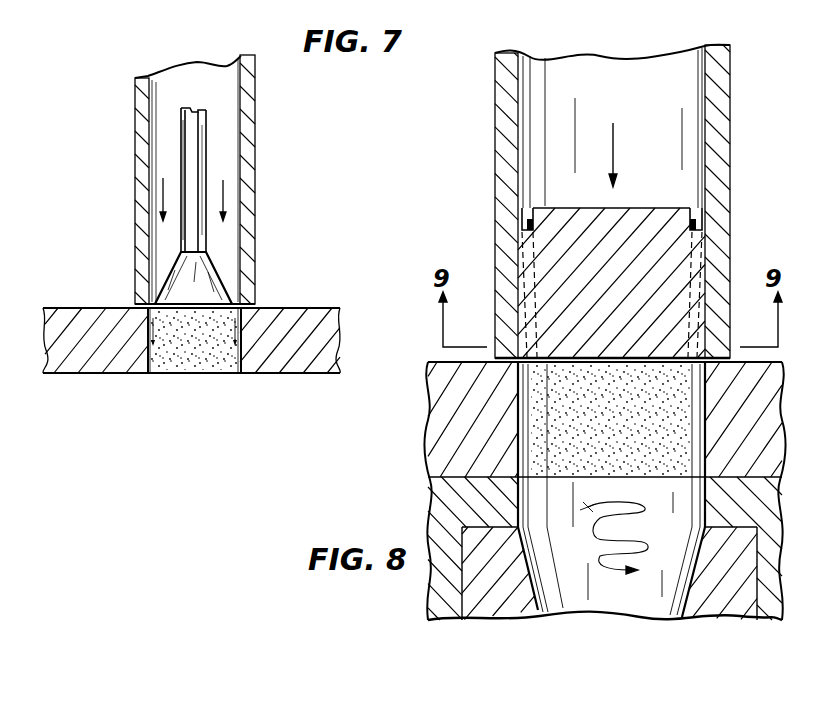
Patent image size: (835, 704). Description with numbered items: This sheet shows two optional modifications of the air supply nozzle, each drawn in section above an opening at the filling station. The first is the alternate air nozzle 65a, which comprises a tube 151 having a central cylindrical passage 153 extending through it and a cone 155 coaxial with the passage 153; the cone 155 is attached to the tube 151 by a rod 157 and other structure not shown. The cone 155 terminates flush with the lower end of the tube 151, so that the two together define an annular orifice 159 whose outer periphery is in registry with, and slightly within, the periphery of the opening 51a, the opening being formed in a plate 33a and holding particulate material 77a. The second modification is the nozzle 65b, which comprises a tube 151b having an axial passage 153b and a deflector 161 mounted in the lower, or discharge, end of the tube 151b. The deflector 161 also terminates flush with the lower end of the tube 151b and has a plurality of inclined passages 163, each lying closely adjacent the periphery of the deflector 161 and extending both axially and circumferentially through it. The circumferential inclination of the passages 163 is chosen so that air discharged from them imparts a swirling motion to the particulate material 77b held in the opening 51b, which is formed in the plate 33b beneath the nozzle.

In FIG. 7, the tube 151 is at (247, 212).
In FIG. 7, the central cylindrical passage 153 is at (223, 105).
In FIG. 7, the alternate air nozzle 65a is at (247, 163).
In FIG. 7, the rod 157 is at (181, 115).
In FIG. 7, the cone 155 is at (203, 287).
In FIG. 7, the annular orifice 159 is at (158, 295).
In FIG. 7, the plate 33a is at (72, 367).
In FIG. 7, the powder fill in hole 77a is at (183, 360).
In FIG. 7, the opening 51a is at (242, 362).
In FIG. 8, the tube 151b is at (720, 128).
In FIG. 8, the axial passage 153b is at (655, 88).
In FIG. 8, the deflector 161 is at (630, 213).
In FIG. 8, the inclined passages 163 is at (525, 218).
In FIG. 8, the nozzle 65b is at (717, 260).
In FIG. 8, the opening 51b is at (535, 418).
In FIG. 8, the lower plate 33b is at (455, 460).
In FIG. 8, the particulate material 77b is at (545, 383).